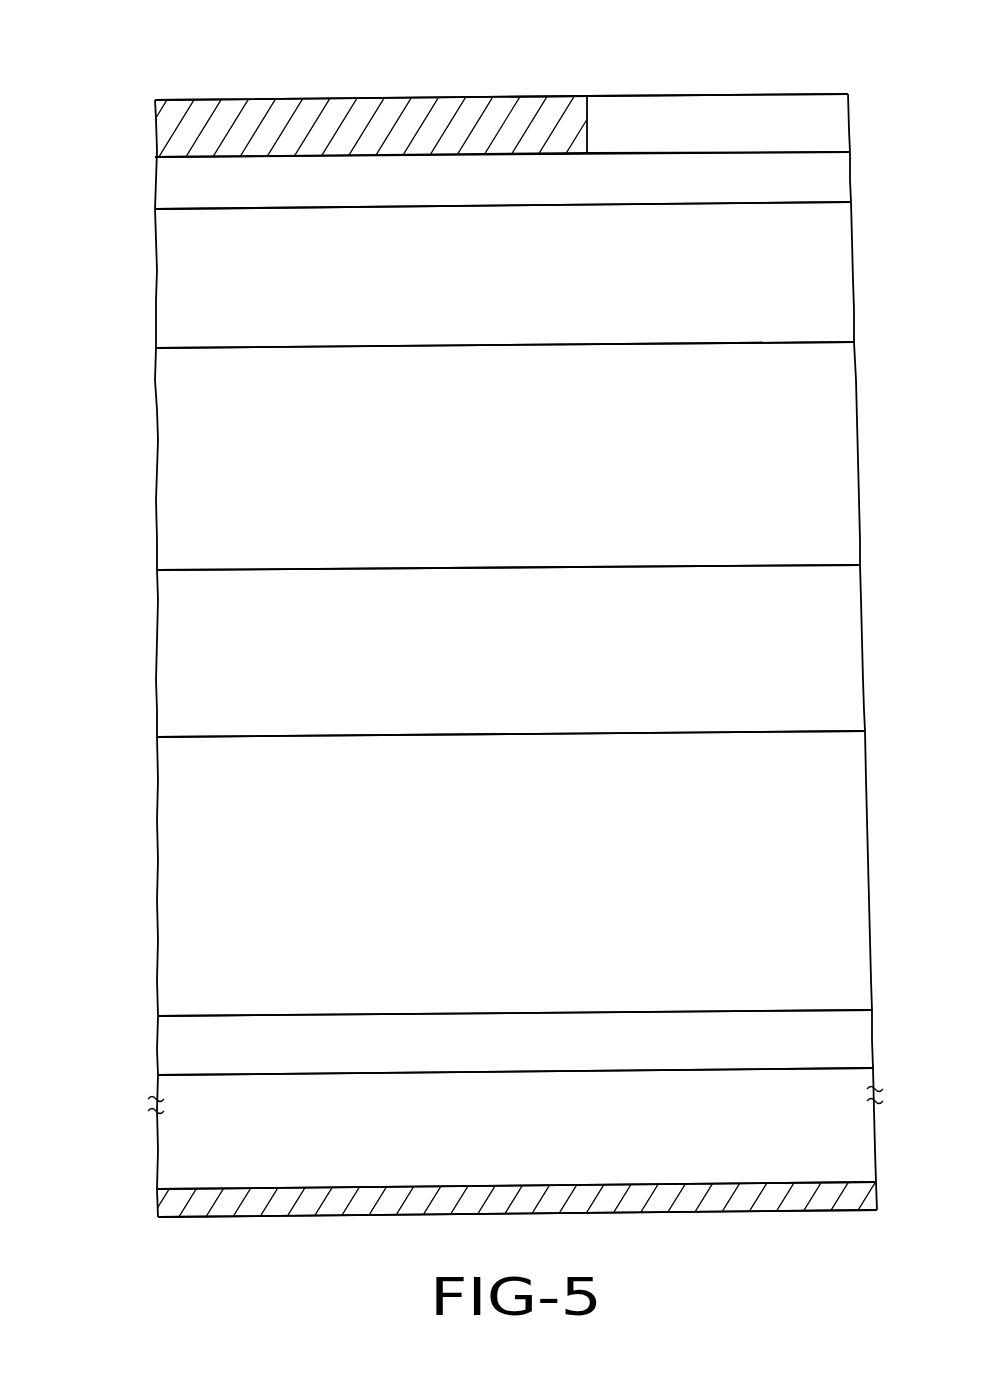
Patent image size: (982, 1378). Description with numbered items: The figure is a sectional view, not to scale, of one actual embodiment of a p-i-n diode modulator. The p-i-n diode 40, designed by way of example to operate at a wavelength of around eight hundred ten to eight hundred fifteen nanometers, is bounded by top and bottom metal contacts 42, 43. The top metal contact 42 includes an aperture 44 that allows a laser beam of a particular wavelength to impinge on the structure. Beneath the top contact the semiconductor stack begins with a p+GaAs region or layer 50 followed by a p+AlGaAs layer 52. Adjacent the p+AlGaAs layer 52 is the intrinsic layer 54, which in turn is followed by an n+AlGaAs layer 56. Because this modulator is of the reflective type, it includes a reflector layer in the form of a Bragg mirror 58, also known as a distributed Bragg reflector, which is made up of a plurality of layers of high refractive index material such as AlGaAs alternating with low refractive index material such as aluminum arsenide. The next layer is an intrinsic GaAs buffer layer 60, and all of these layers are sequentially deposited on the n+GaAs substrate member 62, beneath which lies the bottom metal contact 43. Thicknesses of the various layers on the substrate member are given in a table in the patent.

The p-i-n diode 40 is at (88, 120).
The top metal contact 42 is at (270, 125).
The bottom metal contact 43 is at (203, 1206).
The aperture 44 is at (663, 120).
The p+GaAs layer 50 is at (168, 177).
The p+AlGaAs layer 52 is at (175, 290).
The intrinsic layer 54 is at (193, 468).
The n+AlGaAs layer 56 is at (188, 660).
The Bragg mirror 58 is at (203, 870).
The intrinsic GaAs buffer layer 60 is at (180, 1040).
The n+GaAs substrate member 62 is at (183, 1135).